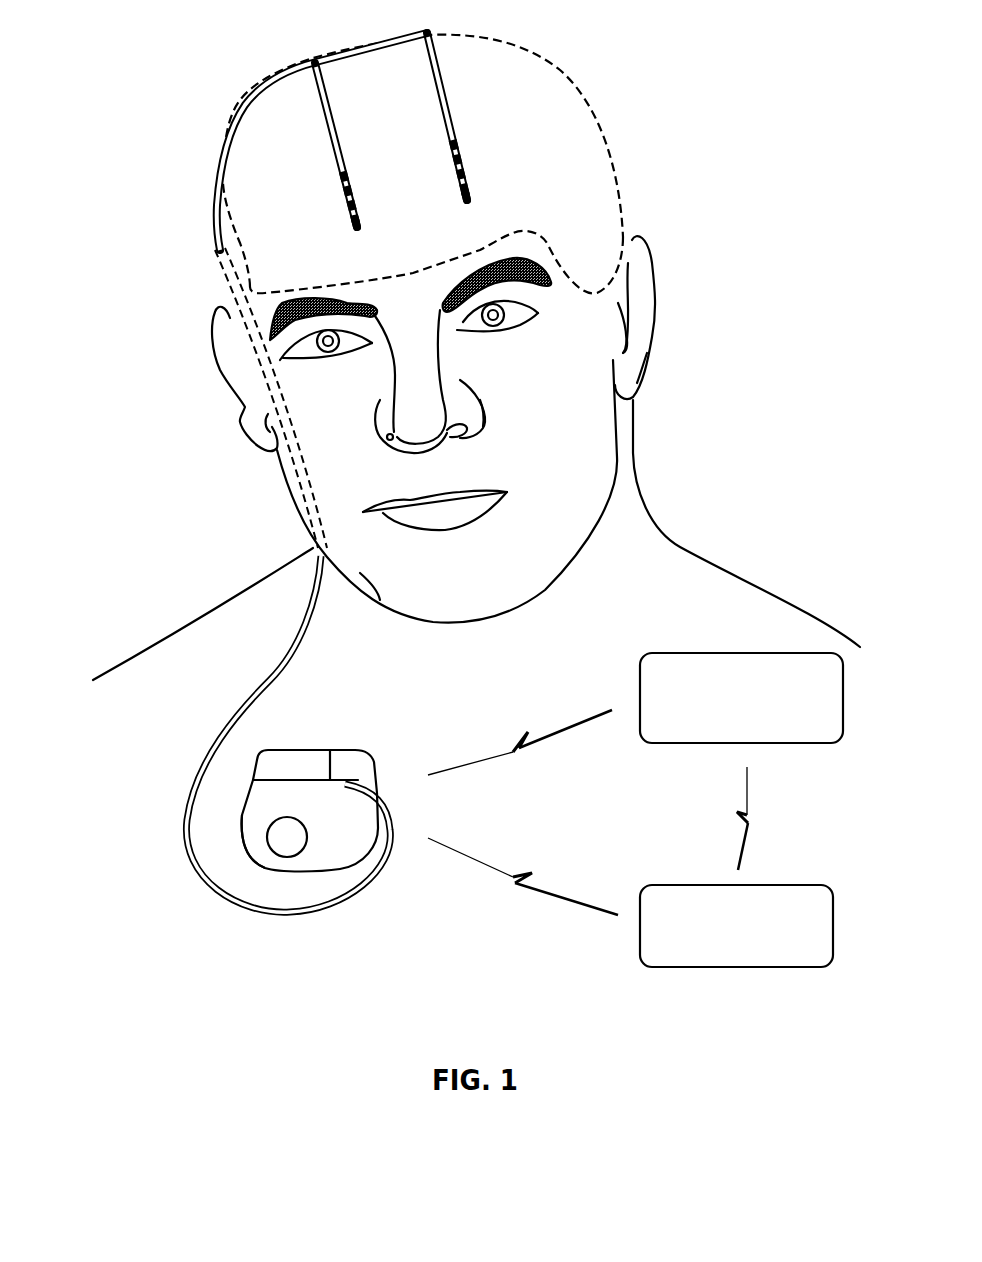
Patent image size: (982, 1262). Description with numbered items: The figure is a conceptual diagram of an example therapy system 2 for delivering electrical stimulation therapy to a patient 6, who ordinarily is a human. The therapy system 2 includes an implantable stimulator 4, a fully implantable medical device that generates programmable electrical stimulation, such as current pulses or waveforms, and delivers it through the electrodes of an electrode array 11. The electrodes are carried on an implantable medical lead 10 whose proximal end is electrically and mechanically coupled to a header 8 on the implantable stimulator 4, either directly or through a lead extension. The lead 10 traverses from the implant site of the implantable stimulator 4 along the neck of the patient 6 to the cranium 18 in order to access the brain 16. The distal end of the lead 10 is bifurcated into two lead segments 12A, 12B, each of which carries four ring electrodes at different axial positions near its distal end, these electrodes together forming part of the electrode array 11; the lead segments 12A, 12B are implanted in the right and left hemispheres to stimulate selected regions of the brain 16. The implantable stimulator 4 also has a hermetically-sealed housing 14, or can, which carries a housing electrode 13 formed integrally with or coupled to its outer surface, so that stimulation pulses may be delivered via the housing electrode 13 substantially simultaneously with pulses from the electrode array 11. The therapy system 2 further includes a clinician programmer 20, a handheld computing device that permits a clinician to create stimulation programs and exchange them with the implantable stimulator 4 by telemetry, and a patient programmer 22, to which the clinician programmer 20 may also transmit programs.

The therapy system 2 is at (754, 68).
The implantable stimulator 4 is at (306, 769).
The patient 6 is at (167, 635).
The header 8 is at (295, 752).
The implantable medical lead 10 is at (280, 665).
The electrode array 11 is at (364, 189).
The lead segment 12A is at (333, 123).
The lead segment 12B is at (447, 100).
The housing electrode 13 is at (307, 833).
The housing 14 is at (243, 855).
The brain 16 is at (583, 108).
The cranium 18 is at (632, 213).
The clinician programmer 20 is at (730, 734).
The patient programmer 22 is at (725, 962).